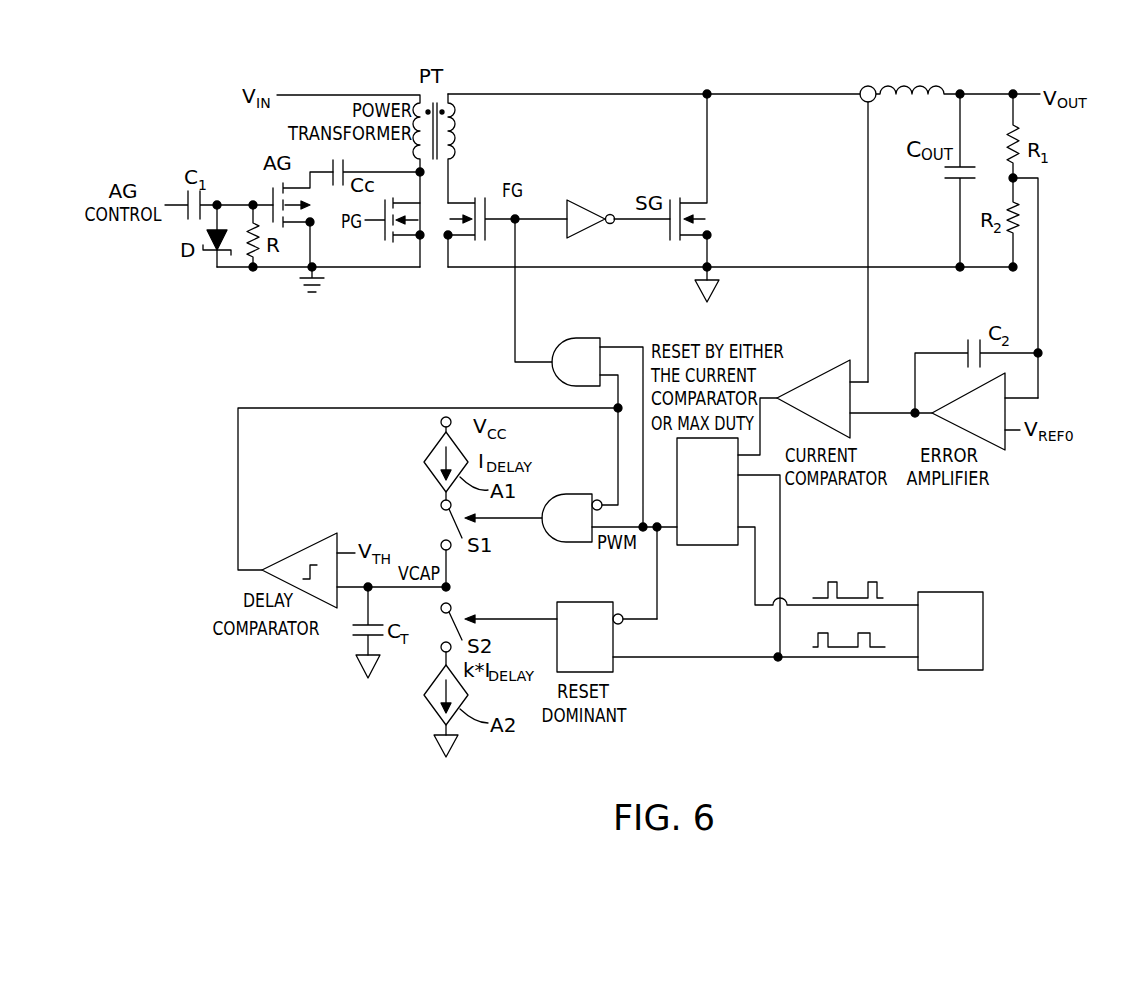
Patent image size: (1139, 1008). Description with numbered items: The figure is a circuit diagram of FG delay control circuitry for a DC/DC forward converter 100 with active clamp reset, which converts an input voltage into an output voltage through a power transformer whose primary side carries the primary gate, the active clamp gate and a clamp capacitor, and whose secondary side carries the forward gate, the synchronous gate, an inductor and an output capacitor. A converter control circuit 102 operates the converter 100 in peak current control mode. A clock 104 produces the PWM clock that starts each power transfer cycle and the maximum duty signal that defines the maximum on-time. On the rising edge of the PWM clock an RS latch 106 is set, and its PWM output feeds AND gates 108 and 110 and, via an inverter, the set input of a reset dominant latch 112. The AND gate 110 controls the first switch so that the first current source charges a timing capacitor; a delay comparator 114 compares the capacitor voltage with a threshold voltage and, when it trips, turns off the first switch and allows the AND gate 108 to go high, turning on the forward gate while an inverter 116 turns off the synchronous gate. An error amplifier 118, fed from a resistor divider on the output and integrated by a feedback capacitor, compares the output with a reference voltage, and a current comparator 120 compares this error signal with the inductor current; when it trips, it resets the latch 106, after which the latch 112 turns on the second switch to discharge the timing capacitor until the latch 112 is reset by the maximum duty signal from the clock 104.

The DC/DC forward converter 100 is at (782, 153).
The converter control circuit 102 is at (947, 556).
The clock 104 is at (984, 628).
The RS latch 106 is at (692, 546).
The AND gate 108 is at (577, 337).
The AND gate 110 is at (570, 494).
The reset dominant latch 112 is at (585, 602).
The delay comparator 114 is at (305, 550).
The inverter 116 is at (582, 201).
The error amplifier 118 is at (998, 452).
The current comparator 120 is at (812, 374).